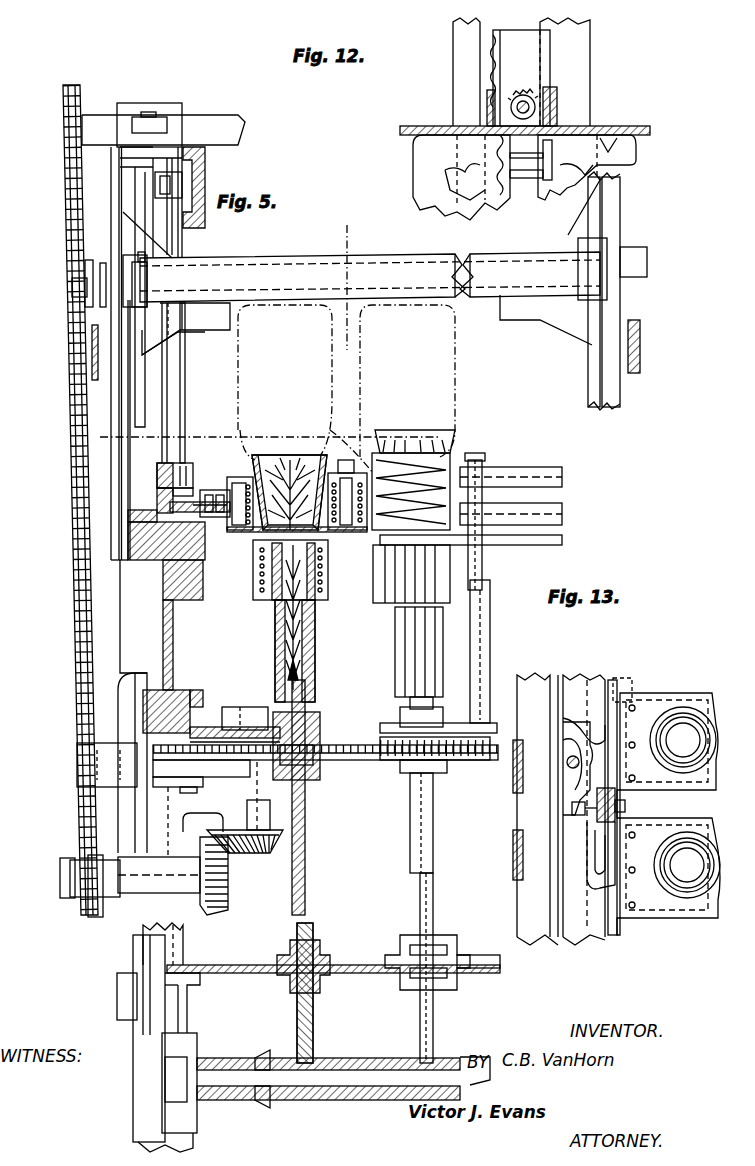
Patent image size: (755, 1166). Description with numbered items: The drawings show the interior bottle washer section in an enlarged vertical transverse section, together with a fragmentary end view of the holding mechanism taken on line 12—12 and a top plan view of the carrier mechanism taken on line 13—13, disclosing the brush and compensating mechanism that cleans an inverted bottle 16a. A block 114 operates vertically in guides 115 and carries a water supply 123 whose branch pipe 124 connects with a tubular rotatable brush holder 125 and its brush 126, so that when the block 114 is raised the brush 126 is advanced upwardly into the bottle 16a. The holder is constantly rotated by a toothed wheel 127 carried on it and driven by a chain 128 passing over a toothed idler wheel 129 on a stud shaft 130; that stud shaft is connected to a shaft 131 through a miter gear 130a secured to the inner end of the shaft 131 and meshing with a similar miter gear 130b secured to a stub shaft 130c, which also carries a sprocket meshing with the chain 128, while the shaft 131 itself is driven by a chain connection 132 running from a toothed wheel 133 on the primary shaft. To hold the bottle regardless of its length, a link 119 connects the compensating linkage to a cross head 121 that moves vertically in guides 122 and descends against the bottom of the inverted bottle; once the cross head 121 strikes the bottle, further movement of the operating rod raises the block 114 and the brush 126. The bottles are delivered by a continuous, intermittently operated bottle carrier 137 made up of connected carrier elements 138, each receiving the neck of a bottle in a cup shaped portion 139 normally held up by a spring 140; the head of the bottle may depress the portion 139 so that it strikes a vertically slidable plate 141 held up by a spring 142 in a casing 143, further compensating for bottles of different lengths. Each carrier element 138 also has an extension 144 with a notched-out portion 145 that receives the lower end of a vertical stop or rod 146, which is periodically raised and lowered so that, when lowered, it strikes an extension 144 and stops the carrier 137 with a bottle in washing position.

In FIG. 5, the section line 12— 12 is at (337, 348).
In FIG. 5, the section line 13— 13 is at (107, 437).
In FIG. 5, the bottle 16a is at (240, 402).
In FIG. 5, the block 114 is at (135, 1050).
In FIG. 5, the guides 115 is at (175, 935).
In FIG. 5, the link 119 is at (640, 340).
In FIG. 5, the cross head 121 is at (647, 268).
In FIG. 12, the guides 122 is at (465, 67).
In FIG. 5, the water supply 123 is at (343, 1080).
In FIG. 5, the branch pipe 124 is at (300, 1015).
In FIG. 5, the tubular rotatable brush holder 125 is at (305, 862).
In FIG. 5, the brush 126 is at (310, 635).
In FIG. 5, the toothed wheel 127 is at (322, 762).
In FIG. 5, the chain 128 is at (388, 758).
In FIG. 5, the toothed idler wheel 129 is at (177, 748).
In FIG. 5, the stud shaft 130 is at (198, 795).
In FIG. 5, the miter gear 130a is at (230, 895).
In FIG. 5, the miter gear 130b is at (240, 858).
In FIG. 5, the stub shaft 130c is at (242, 706).
In FIG. 5, the shaft 131 is at (65, 880).
In FIG. 5, the chain connection 132 is at (75, 500).
In FIG. 5, the toothed wheel 133 is at (82, 130).
In FIG. 5, the continuous bottle carrier 137 is at (467, 514).
In FIG. 13, the continuous bottle carrier 137 is at (670, 857).
In FIG. 5, the carrier element 138 is at (365, 440).
In FIG. 13, the carrier element 138 is at (640, 692).
In FIG. 5, the cup shaped portion 139 is at (252, 462).
In FIG. 13, the cup shaped portion 139 is at (683, 723).
In FIG. 5, the spring 140 is at (245, 540).
In FIG. 5, the vertically slidable plate 141 is at (248, 560).
In FIG. 5, the spring 142 is at (347, 522).
In FIG. 5, the casing 143 is at (322, 598).
In FIG. 5, the extension 144 is at (195, 500).
In FIG. 13, the extension 144 is at (583, 878).
In FIG. 13, the notched-out portion 145 is at (568, 895).
In FIG. 5, the vertical stop or rod 146 is at (187, 380).